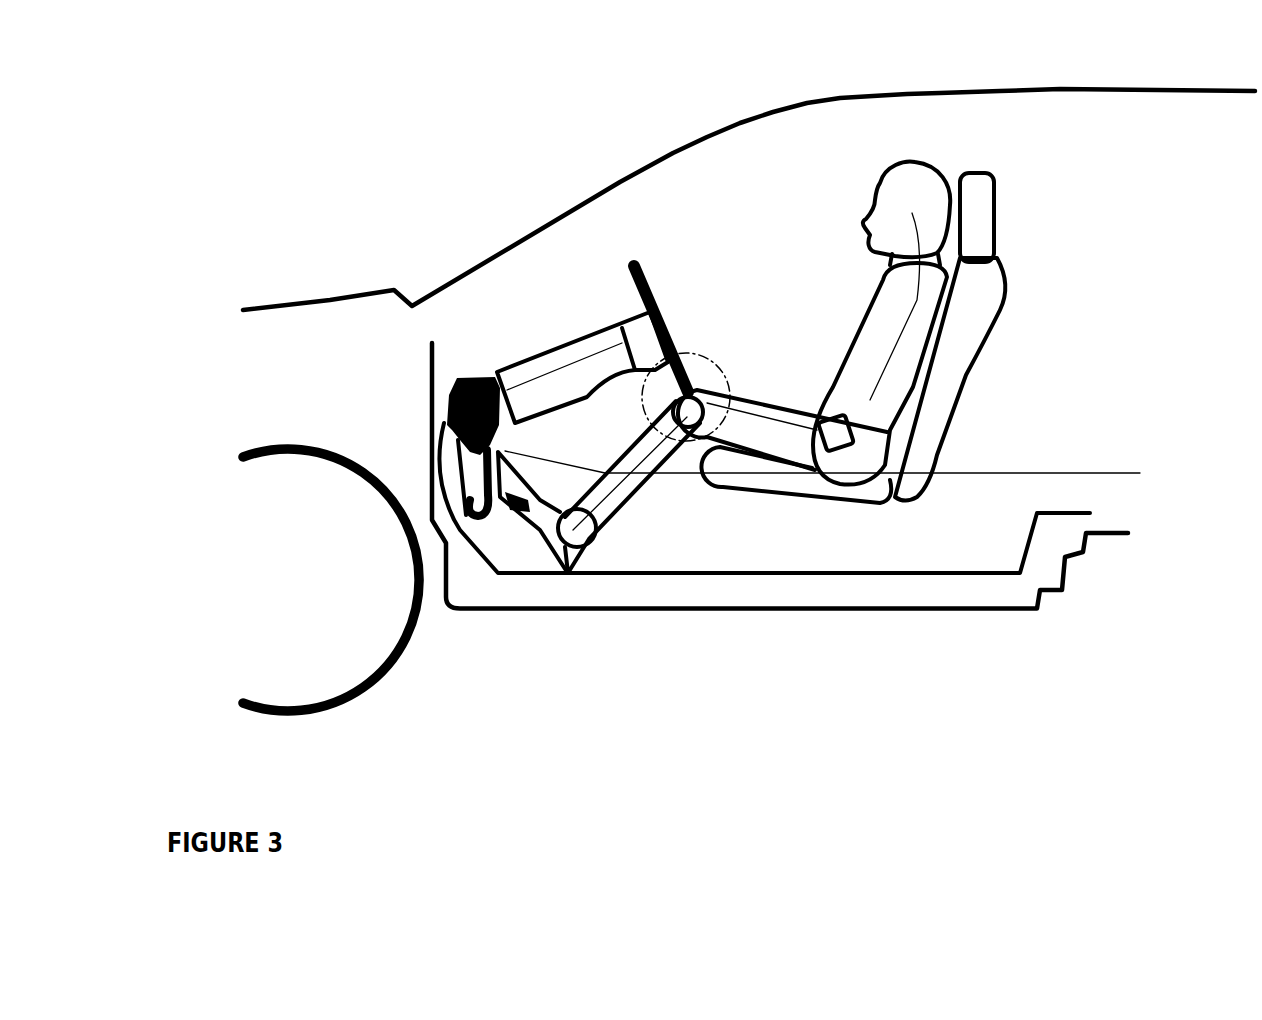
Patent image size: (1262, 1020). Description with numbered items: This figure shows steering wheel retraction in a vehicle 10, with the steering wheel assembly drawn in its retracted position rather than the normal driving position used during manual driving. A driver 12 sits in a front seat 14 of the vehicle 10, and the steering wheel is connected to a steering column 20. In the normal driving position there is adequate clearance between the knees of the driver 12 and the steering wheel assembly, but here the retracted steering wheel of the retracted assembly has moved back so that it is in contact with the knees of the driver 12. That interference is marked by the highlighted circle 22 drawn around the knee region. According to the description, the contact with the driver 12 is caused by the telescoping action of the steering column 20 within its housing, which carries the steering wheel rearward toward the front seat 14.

The vehicle 10 is at (525, 163).
The driver 12 is at (896, 170).
The front seat 14 is at (978, 173).
The steering column 20 is at (604, 398).
The highlighted circle 22 is at (712, 352).